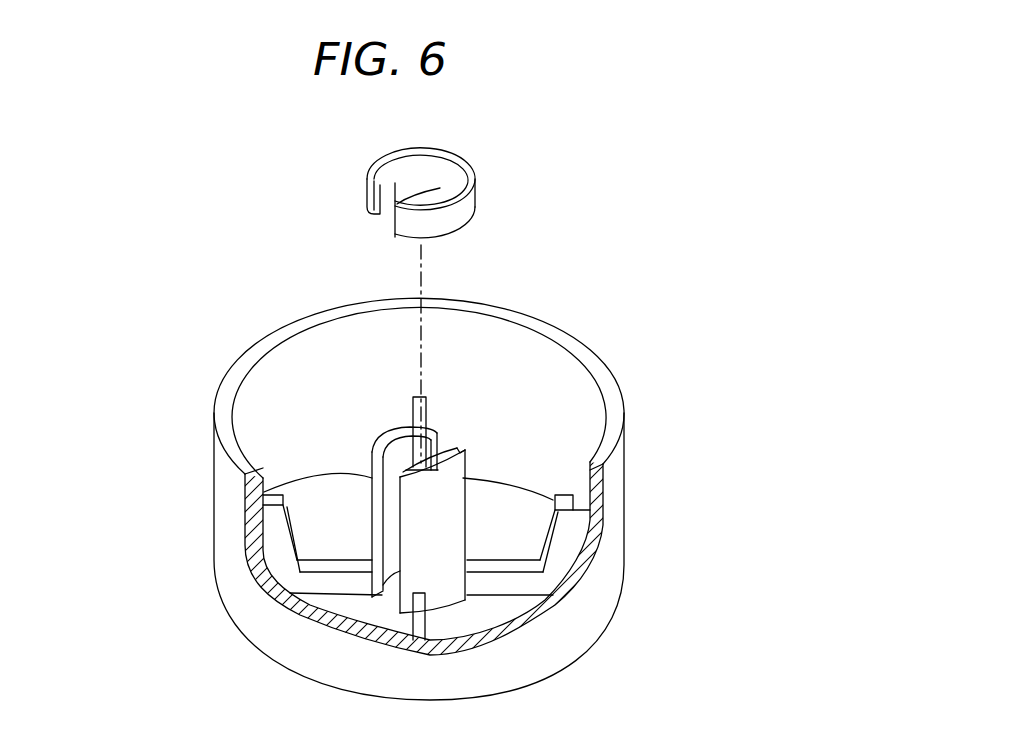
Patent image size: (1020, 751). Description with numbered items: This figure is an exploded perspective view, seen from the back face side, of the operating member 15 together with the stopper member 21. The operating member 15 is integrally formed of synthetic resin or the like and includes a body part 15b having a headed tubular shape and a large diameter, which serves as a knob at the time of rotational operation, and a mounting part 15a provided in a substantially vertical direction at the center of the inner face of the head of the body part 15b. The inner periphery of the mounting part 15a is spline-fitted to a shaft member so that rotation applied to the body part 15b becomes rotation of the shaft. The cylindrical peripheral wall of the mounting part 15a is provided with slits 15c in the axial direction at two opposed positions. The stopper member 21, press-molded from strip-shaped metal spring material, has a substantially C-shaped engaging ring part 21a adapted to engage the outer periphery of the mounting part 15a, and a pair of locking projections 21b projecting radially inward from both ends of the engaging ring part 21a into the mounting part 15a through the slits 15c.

The operating member 15 is at (442, 482).
The mounting part 15a is at (378, 425).
The body part 15b is at (610, 510).
The slits 15c is at (453, 437).
The stopper member 21 is at (424, 190).
The engaging ring part 21a is at (467, 204).
The locking projections 21b is at (392, 185).